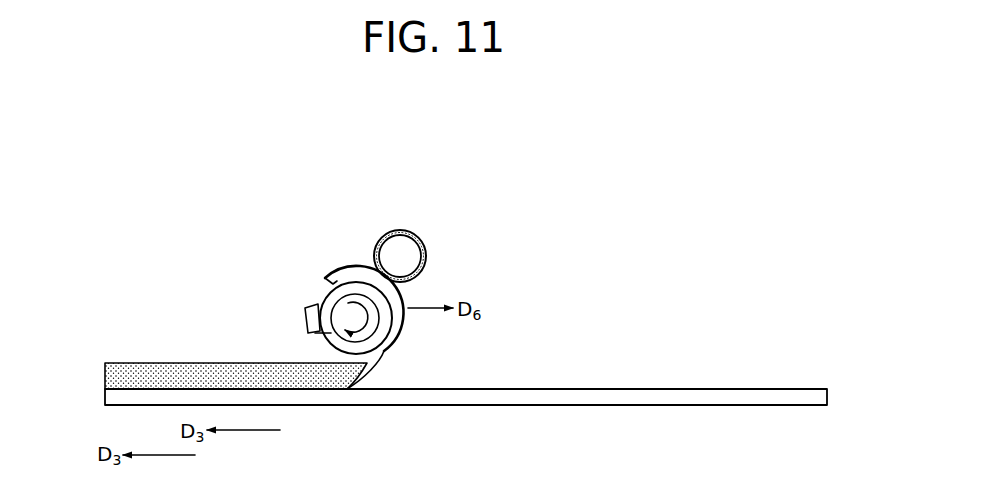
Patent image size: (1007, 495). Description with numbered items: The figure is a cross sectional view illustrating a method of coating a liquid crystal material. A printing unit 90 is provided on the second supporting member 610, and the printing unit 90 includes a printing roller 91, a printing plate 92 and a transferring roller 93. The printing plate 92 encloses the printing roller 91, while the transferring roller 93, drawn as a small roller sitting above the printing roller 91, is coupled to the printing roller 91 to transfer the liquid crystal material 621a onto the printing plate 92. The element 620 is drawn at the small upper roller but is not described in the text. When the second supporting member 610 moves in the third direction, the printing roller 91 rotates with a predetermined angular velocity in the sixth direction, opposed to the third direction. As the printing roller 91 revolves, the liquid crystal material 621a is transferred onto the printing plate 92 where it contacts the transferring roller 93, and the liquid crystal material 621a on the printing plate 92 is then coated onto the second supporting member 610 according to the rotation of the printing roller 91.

The printing unit 90 is at (252, 226).
The printing roller 91 is at (310, 322).
The printing plate 92 is at (327, 284).
The transferring roller 93 is at (387, 258).
The guide roller 620 is at (425, 244).
The liquid crystal material 621a is at (105, 369).
The second supporting member 610 is at (105, 397).